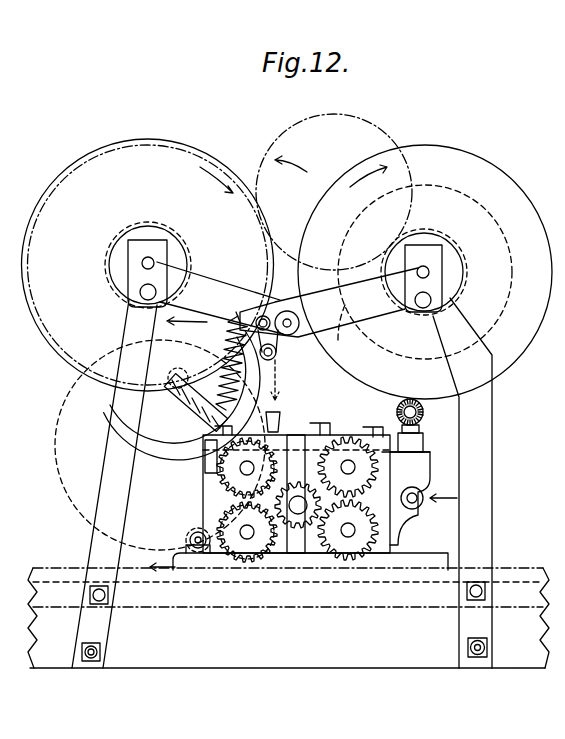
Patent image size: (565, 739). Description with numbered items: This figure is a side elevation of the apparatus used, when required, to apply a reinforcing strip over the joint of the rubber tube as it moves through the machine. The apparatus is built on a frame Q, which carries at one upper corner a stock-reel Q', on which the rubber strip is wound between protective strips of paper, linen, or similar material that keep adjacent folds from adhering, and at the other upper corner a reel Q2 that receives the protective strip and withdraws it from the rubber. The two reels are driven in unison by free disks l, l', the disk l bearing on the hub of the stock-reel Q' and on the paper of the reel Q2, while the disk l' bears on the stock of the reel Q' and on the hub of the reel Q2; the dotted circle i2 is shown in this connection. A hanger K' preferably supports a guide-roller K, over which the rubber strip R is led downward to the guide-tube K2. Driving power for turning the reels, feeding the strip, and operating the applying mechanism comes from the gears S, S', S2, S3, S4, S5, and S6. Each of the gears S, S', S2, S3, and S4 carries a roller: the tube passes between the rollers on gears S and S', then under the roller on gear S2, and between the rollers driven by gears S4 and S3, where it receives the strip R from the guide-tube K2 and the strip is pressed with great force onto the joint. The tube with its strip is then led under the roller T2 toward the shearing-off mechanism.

The stock-reel Q' is at (148, 265).
The reel Q2 is at (495, 183).
The frame Q is at (282, 483).
The free disk l is at (160, 335).
The free disk l' is at (334, 179).
The dotted circle i2 is at (348, 338).
The hanger K' is at (287, 314).
The guide-roller K is at (267, 365).
The guide-tube K2 is at (283, 416).
The rubber strip R is at (278, 401).
The gear S is at (381, 467).
The gear S' is at (348, 570).
The gear S2 is at (283, 547).
The gear S3 is at (245, 547).
The gear S4 is at (225, 476).
The gear S5 is at (205, 470).
The gear S6 is at (182, 386).
The roller T2 is at (198, 549).